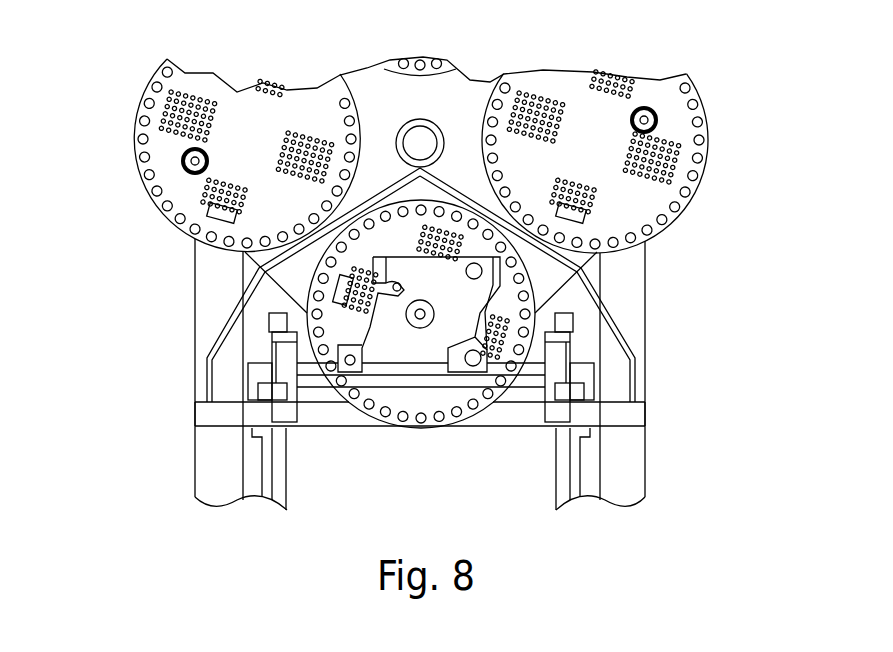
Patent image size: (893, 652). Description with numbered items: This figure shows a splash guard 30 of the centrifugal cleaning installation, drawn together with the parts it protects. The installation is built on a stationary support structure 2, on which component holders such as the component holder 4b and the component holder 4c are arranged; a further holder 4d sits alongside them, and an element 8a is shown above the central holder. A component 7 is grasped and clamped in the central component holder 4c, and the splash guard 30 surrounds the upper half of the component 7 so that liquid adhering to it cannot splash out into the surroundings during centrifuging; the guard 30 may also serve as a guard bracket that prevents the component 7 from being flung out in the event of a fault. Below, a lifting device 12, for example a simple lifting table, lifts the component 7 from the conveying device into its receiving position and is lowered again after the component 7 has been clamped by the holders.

The support structure 2 is at (623, 460).
The splash guard 30 is at (615, 330).
The upper processing station 8a is at (388, 110).
The component holder 4b is at (177, 173).
The right tool disc 4d is at (668, 115).
The component holder 4c is at (503, 287).
The component 7 is at (398, 343).
The lifting device 12 is at (283, 363).